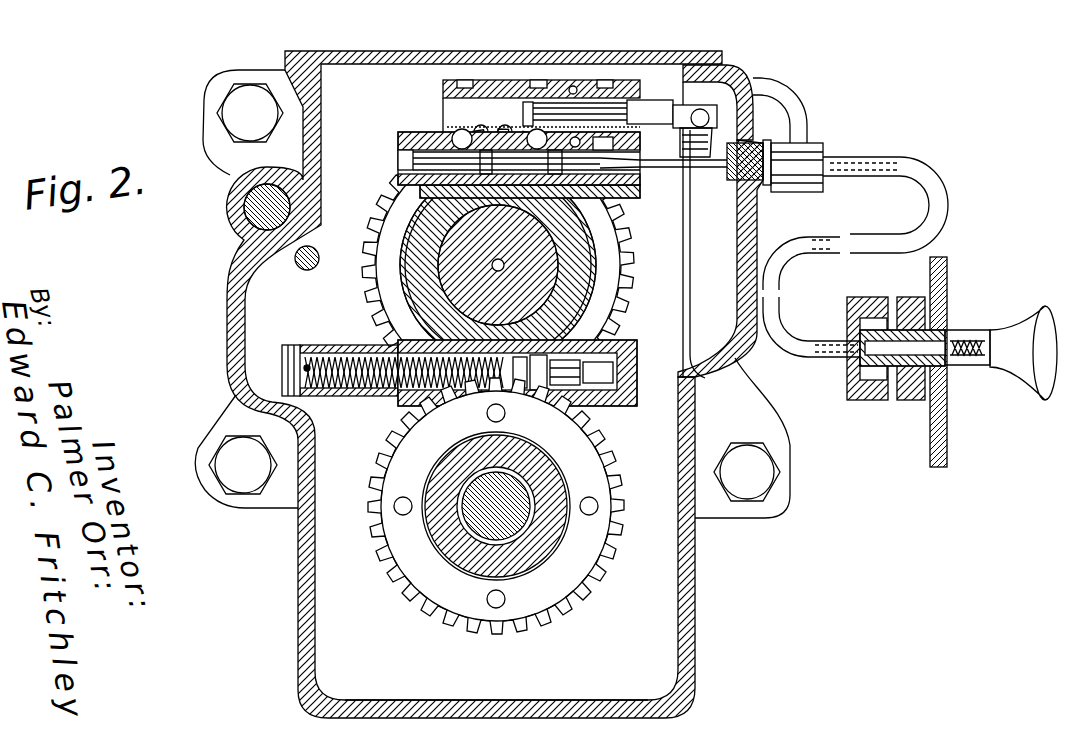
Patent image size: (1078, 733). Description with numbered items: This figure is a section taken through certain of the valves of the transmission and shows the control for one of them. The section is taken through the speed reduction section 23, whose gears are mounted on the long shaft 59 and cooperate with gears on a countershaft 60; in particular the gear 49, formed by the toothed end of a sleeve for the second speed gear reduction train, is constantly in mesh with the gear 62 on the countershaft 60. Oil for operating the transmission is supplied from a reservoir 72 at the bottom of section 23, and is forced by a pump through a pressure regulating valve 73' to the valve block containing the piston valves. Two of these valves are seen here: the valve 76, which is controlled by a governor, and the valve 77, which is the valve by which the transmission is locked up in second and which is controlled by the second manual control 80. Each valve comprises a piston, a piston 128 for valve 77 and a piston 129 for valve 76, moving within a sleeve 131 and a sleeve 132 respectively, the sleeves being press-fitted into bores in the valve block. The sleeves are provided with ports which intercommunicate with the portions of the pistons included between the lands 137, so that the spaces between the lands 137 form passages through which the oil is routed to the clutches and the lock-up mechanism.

The speed reduction section 23 is at (355, 98).
The piston valve 76 is at (655, 95).
The sleeve 132 is at (436, 132).
The piston 129 is at (523, 112).
The sleeve 131 is at (398, 143).
The piston 128 is at (398, 164).
The lands 137 is at (392, 197).
The long shaft 59 is at (455, 262).
The gear 49 is at (372, 284).
The pressure regulating valve 73' is at (459, 384).
The piston valve 77 is at (642, 178).
The second manual control 80 is at (975, 325).
The countershaft 60 is at (540, 522).
The gear 62 is at (447, 608).
The reservoir 72 is at (526, 690).